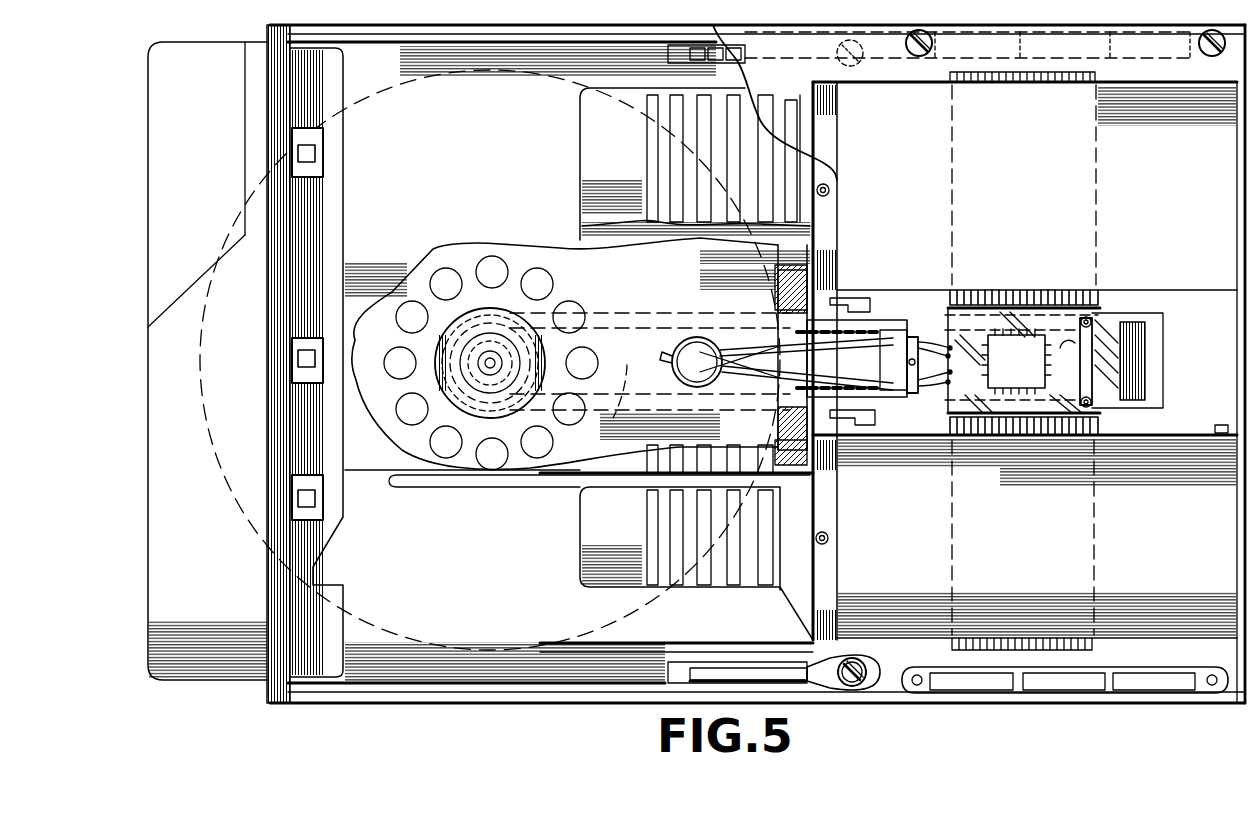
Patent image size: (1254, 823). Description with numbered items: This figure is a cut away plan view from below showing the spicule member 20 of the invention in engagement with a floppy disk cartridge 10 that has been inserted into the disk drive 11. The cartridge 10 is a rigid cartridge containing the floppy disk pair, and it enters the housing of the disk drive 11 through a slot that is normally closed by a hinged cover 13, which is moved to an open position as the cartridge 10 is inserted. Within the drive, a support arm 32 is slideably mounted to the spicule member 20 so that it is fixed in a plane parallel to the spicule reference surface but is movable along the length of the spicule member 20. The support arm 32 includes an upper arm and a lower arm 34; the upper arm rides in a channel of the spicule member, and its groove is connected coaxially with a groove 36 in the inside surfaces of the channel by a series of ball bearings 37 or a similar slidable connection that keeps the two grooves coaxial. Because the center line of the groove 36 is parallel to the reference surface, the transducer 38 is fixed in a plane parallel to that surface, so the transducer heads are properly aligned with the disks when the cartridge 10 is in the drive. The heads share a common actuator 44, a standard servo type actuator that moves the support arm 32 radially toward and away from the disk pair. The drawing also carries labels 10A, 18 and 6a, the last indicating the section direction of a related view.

The cartridge 10 is at (167, 683).
The housing cover 10A is at (165, 112).
The disk drive 11 is at (441, 705).
The hinged cover 13 is at (330, 40).
The rotary actuator 18 is at (513, 312).
The spicule member 20 is at (650, 377).
The support arm 32 is at (898, 302).
The lower arm 34 is at (776, 370).
The groove 36 is at (891, 389).
The ball bearings 37 is at (830, 279).
The transducer 38 is at (688, 338).
The actuator 44 is at (1098, 306).
The section view direction FIG. 6A 6a is at (440, 417).